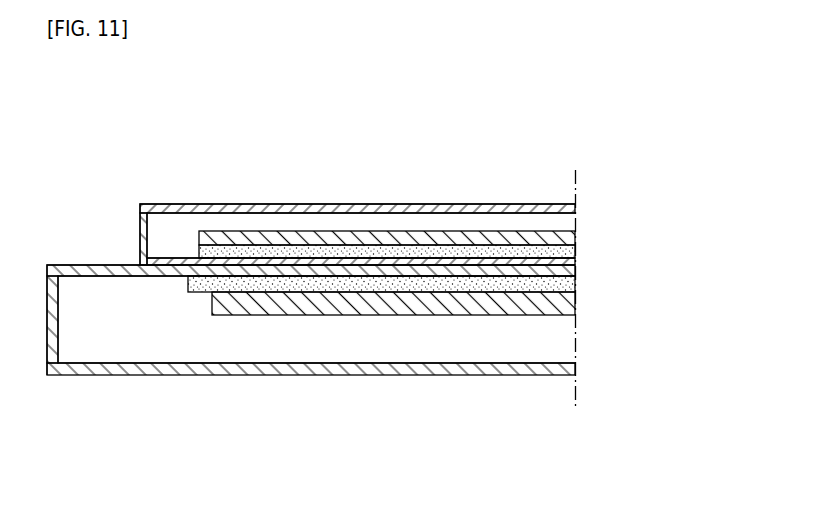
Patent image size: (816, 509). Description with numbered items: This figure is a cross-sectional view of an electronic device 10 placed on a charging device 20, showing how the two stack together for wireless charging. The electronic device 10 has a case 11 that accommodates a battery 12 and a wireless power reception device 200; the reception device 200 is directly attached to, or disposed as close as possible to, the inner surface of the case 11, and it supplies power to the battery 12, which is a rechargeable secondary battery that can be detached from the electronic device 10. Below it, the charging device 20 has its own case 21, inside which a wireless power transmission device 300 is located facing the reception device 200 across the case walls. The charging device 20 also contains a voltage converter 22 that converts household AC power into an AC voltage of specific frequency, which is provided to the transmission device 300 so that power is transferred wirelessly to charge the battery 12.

The electronic device 10 is at (432, 204).
The case 11 is at (183, 258).
The battery 12 is at (574, 240).
The wireless power reception device 200 is at (574, 248).
The wireless power transmission device 300 is at (566, 290).
The voltage converter 22 is at (574, 303).
The charging device 20 is at (432, 376).
The case 21 is at (163, 368).